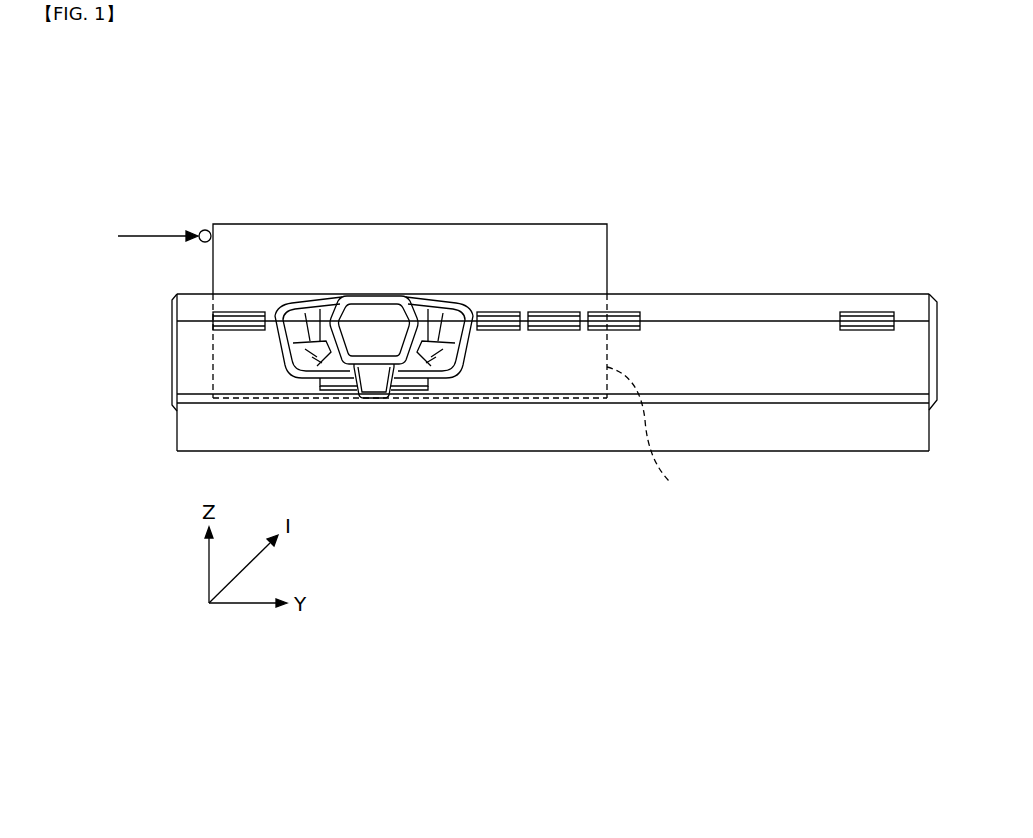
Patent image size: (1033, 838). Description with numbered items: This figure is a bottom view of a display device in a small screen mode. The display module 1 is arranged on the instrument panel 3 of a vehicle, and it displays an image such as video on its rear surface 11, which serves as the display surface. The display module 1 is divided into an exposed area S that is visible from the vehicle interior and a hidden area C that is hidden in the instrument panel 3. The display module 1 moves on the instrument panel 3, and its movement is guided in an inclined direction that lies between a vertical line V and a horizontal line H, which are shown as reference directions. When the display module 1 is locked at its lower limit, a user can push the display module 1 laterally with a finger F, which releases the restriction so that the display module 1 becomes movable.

The display module 1 is at (208, 192).
The instrument panel 3 is at (527, 367).
The rear surface 11 is at (472, 243).
The finger F is at (203, 229).
The exposed area S is at (610, 240).
The hidden area C is at (647, 436).
The vertical line V is at (209, 566).
The horizontal line H is at (240, 605).